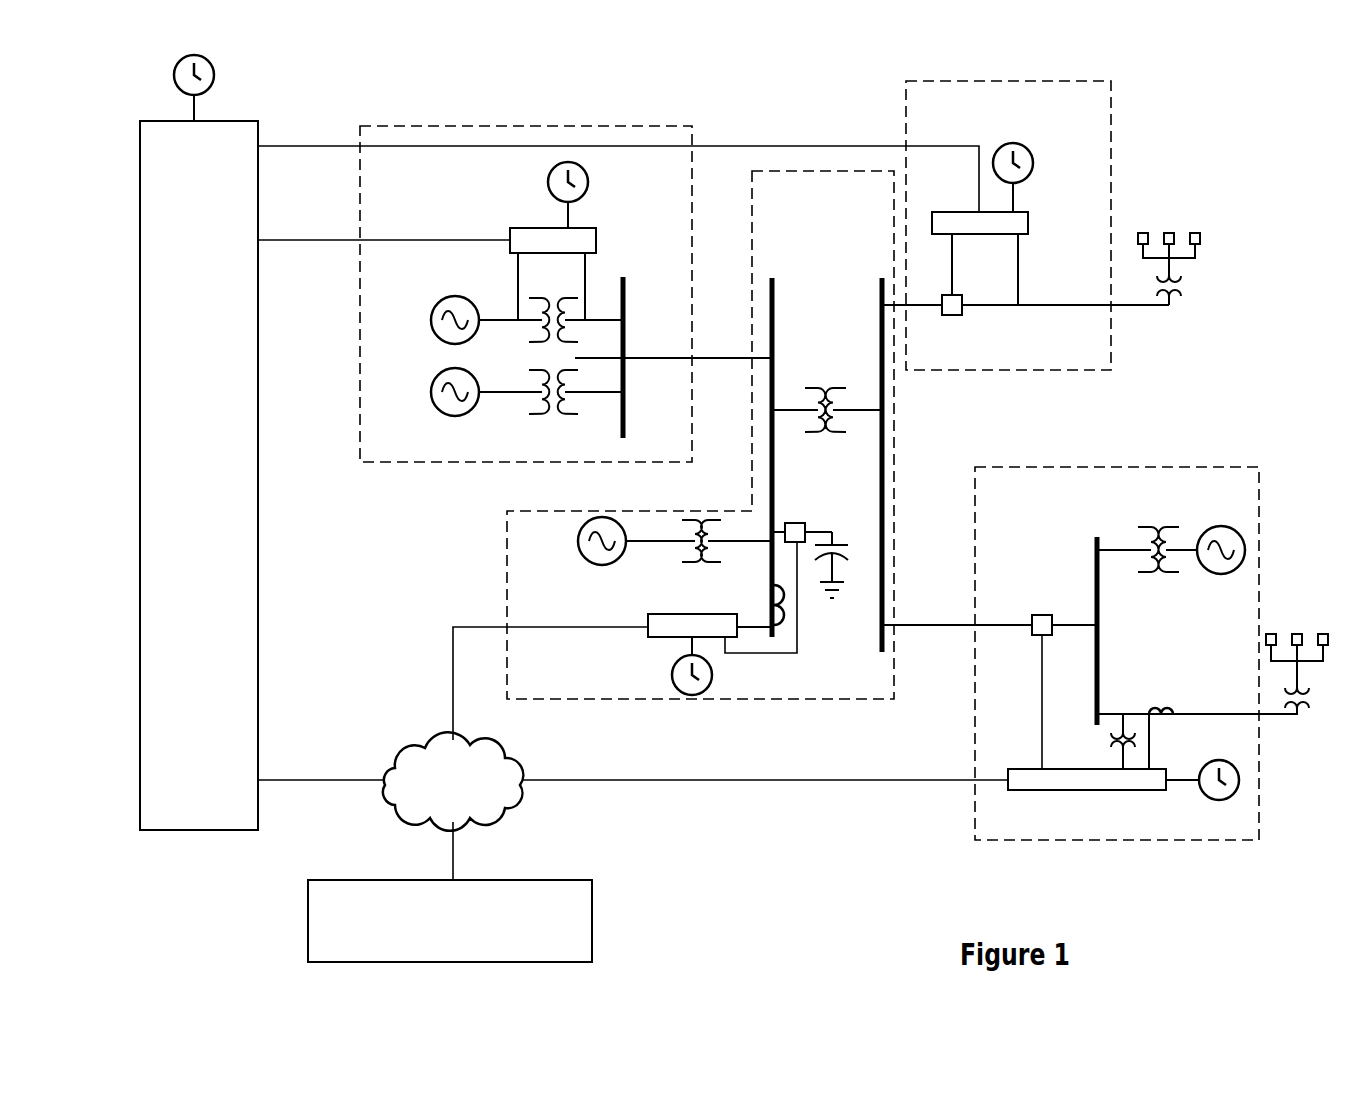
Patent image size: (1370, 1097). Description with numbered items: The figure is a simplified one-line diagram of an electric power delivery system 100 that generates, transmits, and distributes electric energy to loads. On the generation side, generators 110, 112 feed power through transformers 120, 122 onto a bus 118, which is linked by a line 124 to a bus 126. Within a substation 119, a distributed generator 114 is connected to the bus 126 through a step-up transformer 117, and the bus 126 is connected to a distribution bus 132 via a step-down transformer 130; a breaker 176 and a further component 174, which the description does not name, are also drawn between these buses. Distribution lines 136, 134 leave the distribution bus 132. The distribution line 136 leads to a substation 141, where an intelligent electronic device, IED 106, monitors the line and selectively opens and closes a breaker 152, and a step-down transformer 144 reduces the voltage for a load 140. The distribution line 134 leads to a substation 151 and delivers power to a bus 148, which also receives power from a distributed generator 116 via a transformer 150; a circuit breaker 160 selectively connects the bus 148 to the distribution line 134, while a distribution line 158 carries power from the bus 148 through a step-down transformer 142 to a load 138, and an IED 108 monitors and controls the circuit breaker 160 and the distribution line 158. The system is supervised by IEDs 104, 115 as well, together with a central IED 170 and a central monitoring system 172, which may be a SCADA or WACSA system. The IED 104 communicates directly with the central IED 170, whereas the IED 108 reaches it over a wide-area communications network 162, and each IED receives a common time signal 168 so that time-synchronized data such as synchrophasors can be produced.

The electric power delivery system 100 is at (1234, 144).
The IED 104 is at (531, 228).
The IED 106 is at (948, 212).
The IED 108 is at (1140, 791).
The generator 110 is at (431, 320).
The generator 112 is at (431, 392).
The generator 114 is at (578, 541).
The IED 115 is at (718, 614).
The distributed generator 116 is at (1215, 574).
The step-up transformer 117 is at (690, 550).
The bus 118 is at (626, 418).
The substation 119 is at (633, 700).
The transformer 120 is at (537, 333).
The transformer 122 is at (555, 415).
The line 124 is at (706, 360).
The bus 126 is at (775, 432).
The step-down transformer 130 is at (824, 388).
The distribution bus 132 is at (880, 612).
The distribution line 134 is at (988, 627).
The distribution line 136 is at (942, 315).
The load 138 is at (1297, 634).
The load 140 is at (1204, 240).
The substation 141 is at (1085, 371).
The step-down transformer 142 is at (1308, 698).
The step-down transformer 144 is at (1182, 288).
The bus 148 is at (1095, 541).
The transformer 150 is at (1150, 527).
The substation 151 is at (1195, 841).
The breaker 152 is at (962, 315).
The distribution line 158 is at (1160, 712).
The circuit breaker 160 is at (1038, 615).
The communications network 162 is at (437, 805).
The common time signal 168 is at (214, 72).
The central IED 170 is at (183, 500).
The central monitoring system 172 is at (434, 946).
The capacitor bank 174 is at (838, 545).
The breaker 176 is at (795, 523).